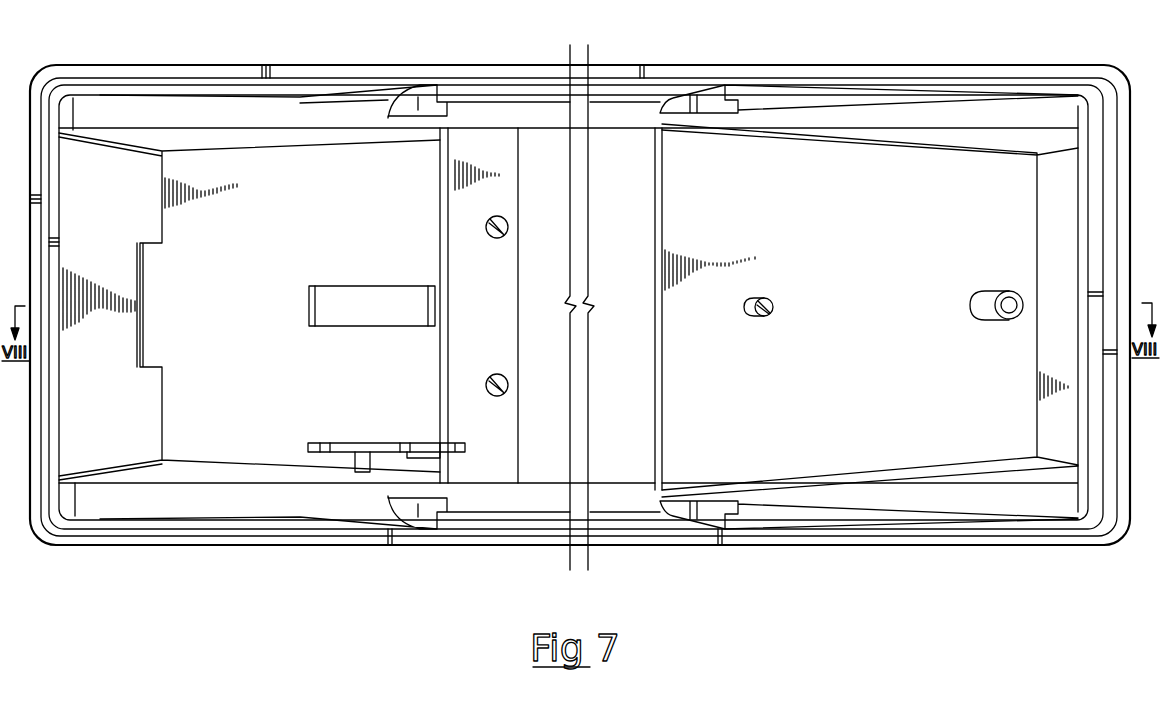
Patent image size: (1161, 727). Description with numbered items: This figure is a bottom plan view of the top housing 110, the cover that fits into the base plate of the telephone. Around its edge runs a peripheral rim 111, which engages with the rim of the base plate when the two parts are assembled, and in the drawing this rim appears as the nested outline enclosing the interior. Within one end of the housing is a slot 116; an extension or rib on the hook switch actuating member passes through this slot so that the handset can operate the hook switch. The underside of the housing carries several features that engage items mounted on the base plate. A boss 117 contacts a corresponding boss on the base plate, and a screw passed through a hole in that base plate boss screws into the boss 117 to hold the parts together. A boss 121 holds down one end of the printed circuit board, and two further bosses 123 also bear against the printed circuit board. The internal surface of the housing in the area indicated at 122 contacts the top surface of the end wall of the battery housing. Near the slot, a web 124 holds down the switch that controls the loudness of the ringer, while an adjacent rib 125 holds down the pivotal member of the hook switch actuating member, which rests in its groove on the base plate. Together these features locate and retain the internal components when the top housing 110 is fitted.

The top housing 110 is at (538, 50).
The peripheral rim 111 is at (372, 65).
The slot 116 is at (375, 290).
The boss 117 is at (972, 301).
The boss 121 is at (776, 307).
The area of internal surface 122 is at (870, 175).
The bosses 123 is at (497, 373).
The web 124 is at (383, 445).
The rib 125 is at (460, 446).